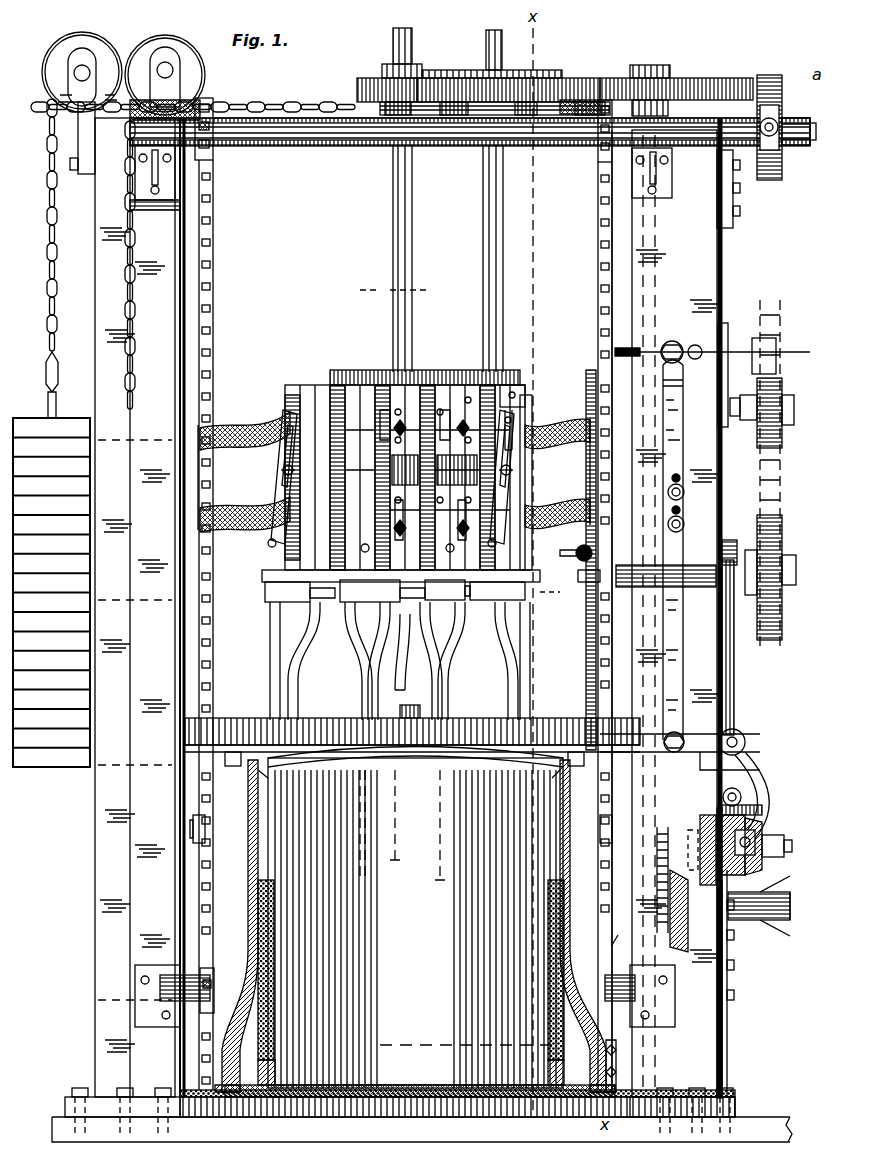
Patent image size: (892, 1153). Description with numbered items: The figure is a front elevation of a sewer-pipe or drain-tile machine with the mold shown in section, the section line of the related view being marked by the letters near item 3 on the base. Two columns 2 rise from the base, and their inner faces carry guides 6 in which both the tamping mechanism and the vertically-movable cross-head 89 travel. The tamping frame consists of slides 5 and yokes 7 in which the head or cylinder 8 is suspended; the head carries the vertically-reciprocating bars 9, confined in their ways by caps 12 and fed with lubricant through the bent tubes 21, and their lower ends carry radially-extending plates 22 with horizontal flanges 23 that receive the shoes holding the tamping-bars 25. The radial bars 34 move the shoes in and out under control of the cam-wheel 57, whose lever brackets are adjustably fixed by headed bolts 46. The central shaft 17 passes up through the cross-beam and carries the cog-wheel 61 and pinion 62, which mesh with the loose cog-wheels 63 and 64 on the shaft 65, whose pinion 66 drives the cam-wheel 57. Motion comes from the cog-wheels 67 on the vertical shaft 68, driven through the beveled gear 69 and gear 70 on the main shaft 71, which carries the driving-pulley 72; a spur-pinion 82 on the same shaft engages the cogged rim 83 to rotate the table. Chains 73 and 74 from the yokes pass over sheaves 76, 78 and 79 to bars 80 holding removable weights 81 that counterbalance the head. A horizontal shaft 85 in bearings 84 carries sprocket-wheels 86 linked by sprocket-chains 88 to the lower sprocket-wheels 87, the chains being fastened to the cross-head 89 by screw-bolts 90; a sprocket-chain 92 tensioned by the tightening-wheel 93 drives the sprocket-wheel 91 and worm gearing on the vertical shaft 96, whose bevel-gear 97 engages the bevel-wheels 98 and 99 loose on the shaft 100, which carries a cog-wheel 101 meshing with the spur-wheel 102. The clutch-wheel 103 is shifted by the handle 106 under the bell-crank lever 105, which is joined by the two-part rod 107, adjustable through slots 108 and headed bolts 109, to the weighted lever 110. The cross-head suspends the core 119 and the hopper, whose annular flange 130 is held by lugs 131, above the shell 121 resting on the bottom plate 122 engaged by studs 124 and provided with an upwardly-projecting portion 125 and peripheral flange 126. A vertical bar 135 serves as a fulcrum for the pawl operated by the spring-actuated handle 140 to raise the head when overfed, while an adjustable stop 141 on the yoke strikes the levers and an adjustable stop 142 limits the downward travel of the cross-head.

The columns 2 is at (140, 780).
The left base foot 3 is at (268, 1100).
The vertically-movable slides 5 is at (180, 468).
The guides 6 is at (640, 326).
The yokes 7 is at (250, 428).
The head or cylinder 8 is at (528, 500).
The vertically-reciprocating bars 9 is at (403, 584).
The caps 12 is at (305, 396).
The vertical revolving shaft 17 is at (393, 238).
The upwardly-bent tubes or pipes 21 is at (275, 480).
The radially-extending plates 22 is at (403, 666).
The horizontal flanges 23 is at (300, 592).
The tamping-bars 25 is at (268, 682).
The radial arms or bars 34 is at (409, 553).
The headed bolts 46 is at (515, 425).
The cam-wheel 57 is at (425, 366).
The cog-wheel 61 is at (340, 110).
The pinion 62 is at (381, 81).
The loose cog-wheel 63 is at (504, 50).
The loose cog-wheel 64 is at (476, 108).
The shaft 65 is at (505, 258).
The pinion 66 is at (405, 458).
The cog-wheels 67 is at (710, 80).
The vertical shaft 68 is at (655, 268).
The beveled gear 69 is at (600, 940).
The gear 70 is at (722, 920).
The main shaft 71 is at (790, 904).
The driving-pulley 72 is at (520, 393).
The chain 73 is at (598, 282).
The chain 74 is at (213, 290).
The sheave 76 is at (576, 114).
The sheave 78 is at (165, 77).
The sheave 79 is at (82, 103).
The bars 80 is at (35, 258).
The removable weights 81 is at (51, 592).
The spur-pinion 82 is at (682, 1111).
The cogged rim 83 is at (468, 1105).
The bearings 84 is at (135, 170).
The horizontal shaft 85 is at (332, 140).
The sprocket-wheels 86 is at (214, 152).
The sprocket-wheels 87 is at (405, 990).
The sprocket-chains 88 is at (213, 600).
The cross-head 89 is at (412, 724).
The screw-bolts 90 is at (822, 86).
The sprocket-wheel 91 is at (774, 577).
The sprocket-chain 92 is at (775, 493).
The tightening-wheel 93 is at (767, 413).
The vertical shaft 96 is at (737, 637).
The bevel-gear 97 is at (760, 818).
The bevel-wheel 98 is at (764, 838).
The bevel-wheel 99 is at (706, 818).
The shaft 100 is at (688, 836).
The cog-wheel 101 is at (657, 848).
The spur-wheel 102 is at (670, 905).
The clutch-wheel 103 is at (752, 812).
The bell-crank lever 105 is at (742, 735).
The handle 106 is at (723, 797).
The two-part rod 107 is at (663, 624).
The slots 108 is at (672, 478).
The headed bolts 109 is at (684, 492).
The lever 110 is at (676, 346).
The mold-core sections 119 is at (415, 918).
The shell 121 is at (402, 970).
The bottom plate 122 is at (268, 1072).
The studs 124 is at (230, 1082).
The upwardly-projecting portion 125 is at (576, 1000).
The peripheral flange 126 is at (624, 1066).
The annular flange 130 is at (246, 782).
The lugs 131 is at (233, 768).
The vertical bar 135 is at (586, 636).
The spring-actuated handle 140 is at (578, 563).
The adjustable stop 141 is at (624, 458).
The adjustable stop 142 is at (193, 826).